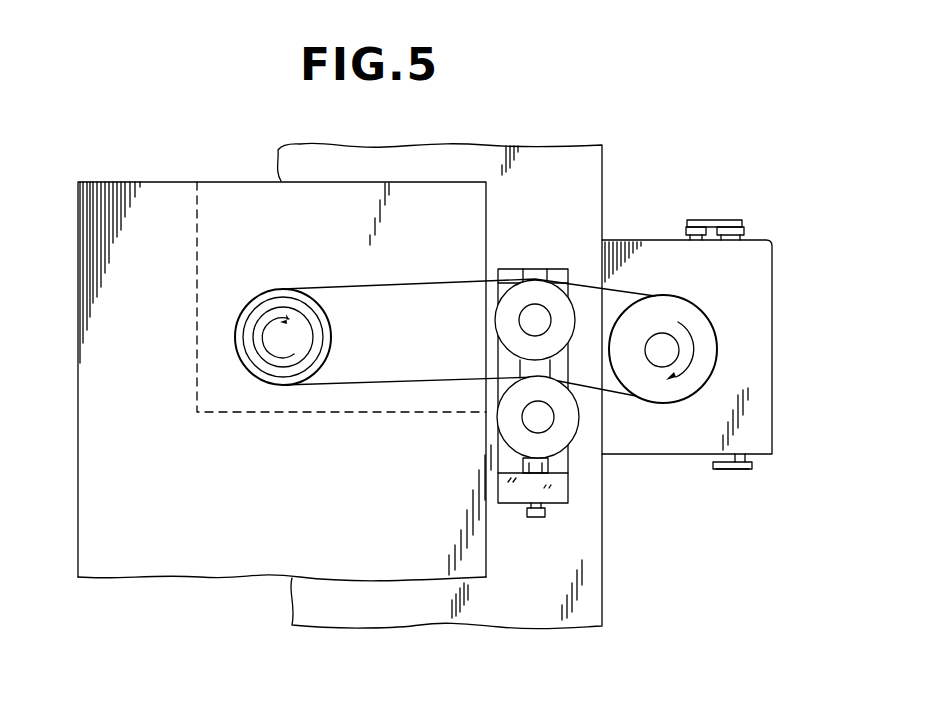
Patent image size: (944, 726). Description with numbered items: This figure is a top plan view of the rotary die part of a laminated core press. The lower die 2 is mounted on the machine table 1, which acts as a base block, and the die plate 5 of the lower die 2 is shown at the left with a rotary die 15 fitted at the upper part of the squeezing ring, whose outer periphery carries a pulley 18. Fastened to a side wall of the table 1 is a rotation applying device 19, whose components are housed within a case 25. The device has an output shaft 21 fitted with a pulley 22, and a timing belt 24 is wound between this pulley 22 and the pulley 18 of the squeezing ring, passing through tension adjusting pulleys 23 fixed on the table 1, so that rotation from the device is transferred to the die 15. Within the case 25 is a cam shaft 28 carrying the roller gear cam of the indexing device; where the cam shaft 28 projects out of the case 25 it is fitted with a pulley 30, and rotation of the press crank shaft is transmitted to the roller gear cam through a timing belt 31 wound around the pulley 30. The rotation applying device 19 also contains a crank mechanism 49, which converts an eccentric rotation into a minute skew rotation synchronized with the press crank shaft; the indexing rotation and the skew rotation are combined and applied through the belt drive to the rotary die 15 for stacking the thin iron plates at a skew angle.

The machine table 1 is at (416, 610).
The lower die 2 is at (72, 458).
The die plate 5 is at (97, 378).
The die 15 is at (253, 365).
The pulley 18 is at (272, 383).
The rotation applying device 19 is at (774, 312).
The output shaft 21 is at (662, 355).
The pulley 22 is at (668, 305).
The tension adjusting pulleys 23 is at (538, 280).
The timing belt 24 is at (405, 385).
The case 25 is at (760, 381).
The cam shaft 28 is at (736, 455).
The pulley 30 is at (725, 470).
The timing belt 31 is at (752, 465).
The crank mechanism 49 is at (714, 218).